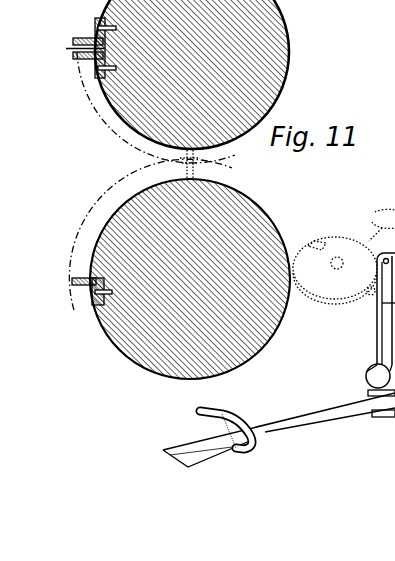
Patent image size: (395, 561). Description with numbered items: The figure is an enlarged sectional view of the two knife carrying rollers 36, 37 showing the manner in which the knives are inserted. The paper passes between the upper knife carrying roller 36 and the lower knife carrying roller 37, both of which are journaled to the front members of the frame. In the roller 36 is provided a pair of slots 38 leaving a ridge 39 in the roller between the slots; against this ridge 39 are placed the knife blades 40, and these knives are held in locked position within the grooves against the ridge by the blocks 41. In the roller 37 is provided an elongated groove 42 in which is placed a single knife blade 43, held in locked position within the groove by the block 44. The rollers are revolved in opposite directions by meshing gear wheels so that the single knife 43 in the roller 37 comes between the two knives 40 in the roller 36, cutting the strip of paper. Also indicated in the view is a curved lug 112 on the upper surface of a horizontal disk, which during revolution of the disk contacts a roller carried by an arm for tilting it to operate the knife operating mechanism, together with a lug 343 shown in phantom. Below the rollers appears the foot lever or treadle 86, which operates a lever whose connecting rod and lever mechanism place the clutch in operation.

The knife carrying roller 36 is at (283, 46).
The knife carrying roller 37 is at (266, 224).
The slots 38 is at (97, 22).
The ridge 39 is at (67, 51).
The knife blades 40 is at (88, 40).
The blocks 41 is at (95, 27).
The elongated groove 42 is at (97, 302).
The knife blade 43 is at (76, 283).
The block 44 is at (96, 289).
The foot lever or treadle 86 is at (317, 421).
The curved lug 112 is at (320, 241).
The follower 343 is at (368, 295).